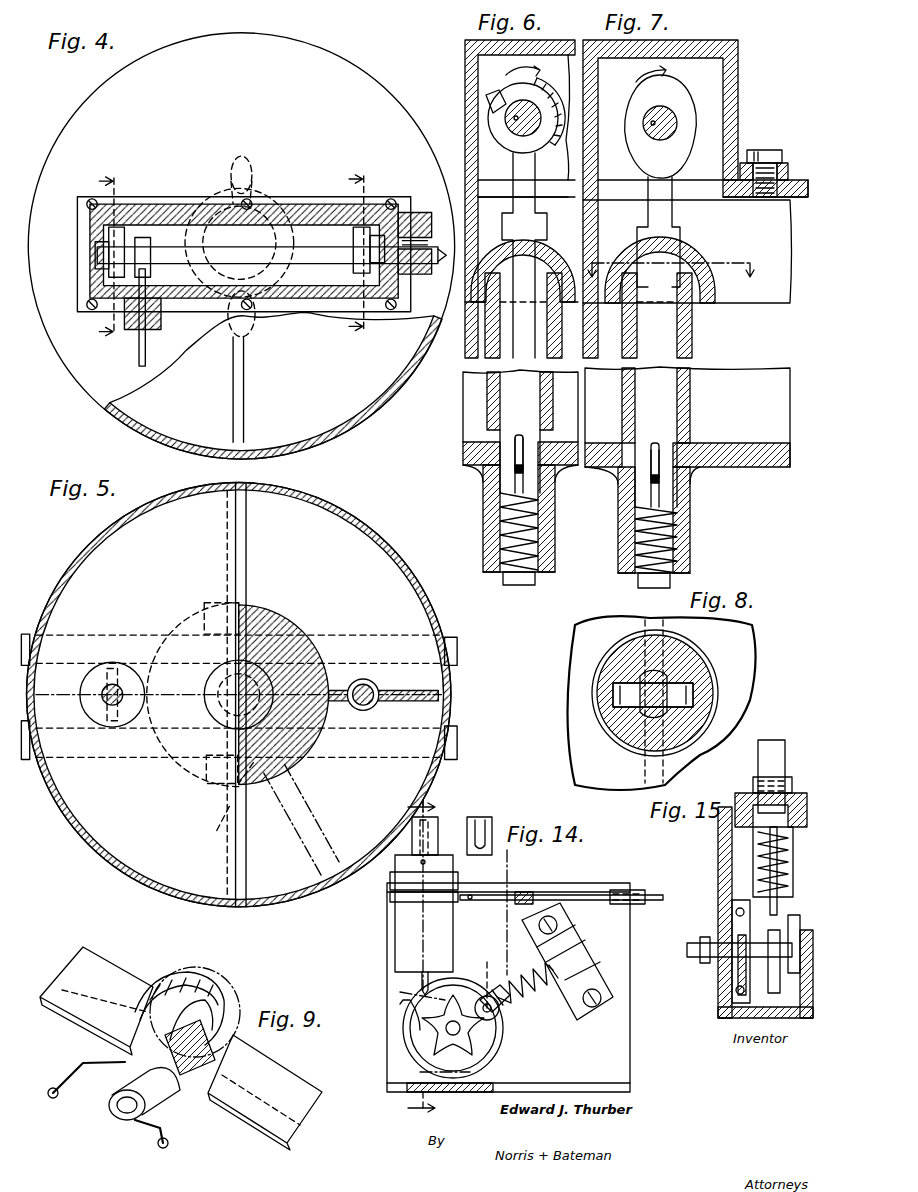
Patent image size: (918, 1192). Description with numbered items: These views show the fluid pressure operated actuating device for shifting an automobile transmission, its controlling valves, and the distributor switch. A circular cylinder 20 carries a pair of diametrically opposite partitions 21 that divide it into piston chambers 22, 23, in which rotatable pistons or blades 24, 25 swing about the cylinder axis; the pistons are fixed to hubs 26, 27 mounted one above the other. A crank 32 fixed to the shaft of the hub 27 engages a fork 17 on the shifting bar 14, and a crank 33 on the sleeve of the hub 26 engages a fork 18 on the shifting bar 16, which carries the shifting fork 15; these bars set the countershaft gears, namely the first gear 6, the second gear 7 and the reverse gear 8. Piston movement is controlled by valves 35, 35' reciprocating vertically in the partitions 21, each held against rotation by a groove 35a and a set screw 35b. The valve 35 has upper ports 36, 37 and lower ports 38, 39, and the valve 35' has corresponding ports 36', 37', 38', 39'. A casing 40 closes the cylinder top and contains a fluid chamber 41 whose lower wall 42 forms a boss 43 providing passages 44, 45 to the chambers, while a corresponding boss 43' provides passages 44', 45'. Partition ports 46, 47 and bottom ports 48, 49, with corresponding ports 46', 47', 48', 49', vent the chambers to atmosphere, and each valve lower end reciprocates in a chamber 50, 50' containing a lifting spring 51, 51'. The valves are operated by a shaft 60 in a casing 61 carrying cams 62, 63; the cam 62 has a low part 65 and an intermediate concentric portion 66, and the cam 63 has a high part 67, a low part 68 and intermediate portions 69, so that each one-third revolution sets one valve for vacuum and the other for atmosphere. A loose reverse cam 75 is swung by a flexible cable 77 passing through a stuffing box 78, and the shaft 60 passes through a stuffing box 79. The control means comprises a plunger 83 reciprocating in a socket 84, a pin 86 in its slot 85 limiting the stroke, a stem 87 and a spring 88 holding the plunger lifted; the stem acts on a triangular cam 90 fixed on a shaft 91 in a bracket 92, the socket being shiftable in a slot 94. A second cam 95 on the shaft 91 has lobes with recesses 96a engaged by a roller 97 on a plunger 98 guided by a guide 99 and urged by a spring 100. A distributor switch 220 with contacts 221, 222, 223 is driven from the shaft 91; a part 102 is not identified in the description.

In FIG. 4, the first gear 6 is at (107, 263).
In FIG. 4, the second gear 7 is at (357, 258).
In FIG. 7, the reverse gear 8 is at (670, 256).
In FIG. 5, the shifting bar 14 is at (436, 745).
In FIG. 14, the shifting fork 15 is at (445, 958).
In FIG. 5, the shifting bar 16 is at (436, 641).
In FIG. 5, the fork 17 is at (231, 803).
In FIG. 5, the fork 18 is at (236, 612).
In FIG. 4, the circular cylinder 20 is at (336, 409).
In FIG. 5, the circular cylinder 20 is at (430, 613).
In FIG. 5, the partitions 21 is at (415, 676).
In FIG. 8, the partitions 21 is at (642, 701).
In FIG. 5, the piston chamber 22 is at (329, 592).
In FIG. 6, the piston chamber 22 is at (456, 392).
In FIG. 7, the piston chamber 22 is at (601, 391).
In FIG. 4, the piston chamber 23 is at (331, 384).
In FIG. 5, the piston chamber 23 is at (364, 822).
In FIG. 6, the piston chamber 23 is at (564, 390).
In FIG. 7, the piston chamber 23 is at (708, 389).
In FIG. 5, the piston 24 is at (233, 549).
In FIG. 9, the piston 24 is at (116, 976).
In FIG. 4, the piston 25 is at (233, 386).
In FIG. 5, the piston 25 is at (233, 836).
In FIG. 9, the piston 25 is at (265, 1117).
In FIG. 9, the hub 26 is at (112, 1057).
In FIG. 9, the hub 27 is at (206, 986).
In FIG. 4, the crank 32 is at (246, 322).
In FIG. 5, the crank 32 is at (202, 777).
In FIG. 9, the crank 32 is at (172, 1142).
In FIG. 4, the crank 33 is at (238, 168).
In FIG. 5, the crank 33 is at (200, 616).
In FIG. 9, the crank 33 is at (70, 1066).
In FIG. 5, the valve 35 is at (112, 688).
In FIG. 6, the valve 35 is at (516, 335).
In FIG. 5, the valve 35' is at (384, 707).
In FIG. 7, the valve 35' is at (655, 337).
In FIG. 8, the valve 35' is at (704, 645).
In FIG. 6, the grooves 35a is at (519, 435).
In FIG. 7, the grooves 35a is at (656, 443).
In FIG. 6, the set screws 35b is at (522, 479).
In FIG. 7, the set screws 35b is at (657, 488).
In FIG. 6, the port 36 is at (524, 255).
In FIG. 7, the port 36' is at (645, 232).
In FIG. 8, the port 36' is at (594, 742).
In FIG. 6, the port 37 is at (552, 224).
In FIG. 7, the port 37' is at (698, 226).
In FIG. 8, the port 37' is at (680, 685).
In FIG. 6, the port 38 is at (480, 461).
In FIG. 7, the port 38' is at (619, 475).
In FIG. 6, the port 39 is at (549, 461).
In FIG. 7, the port 39' is at (687, 475).
In FIG. 7, the casing 40 is at (752, 200).
In FIG. 7, the fluid chamber 41 is at (778, 235).
In FIG. 7, the lower wall 42 is at (760, 284).
In FIG. 8, the lower wall 42 is at (570, 690).
In FIG. 6, the boss 43 is at (521, 249).
In FIG. 8, the boss 43 is at (641, 693).
In FIG. 7, the arch wall 43' is at (668, 266).
In FIG. 6, the passage 44 is at (511, 199).
In FIG. 7, the passage 44' is at (622, 318).
In FIG. 8, the passage 44' is at (649, 693).
In FIG. 6, the passage 45 is at (521, 315).
In FIG. 7, the passage 45' is at (670, 315).
In FIG. 8, the passage 45' is at (686, 695).
In FIG. 6, the port 46 is at (513, 406).
In FIG. 7, the port 46' is at (687, 417).
In FIG. 6, the port 47 is at (520, 437).
In FIG. 7, the port 47' is at (687, 438).
In FIG. 6, the port 48 is at (473, 518).
In FIG. 7, the vent port 48' is at (610, 520).
In FIG. 6, the port 49 is at (558, 518).
In FIG. 7, the vent port 49' is at (694, 520).
In FIG. 6, the chamber 50 is at (533, 558).
In FIG. 7, the chamber 50' is at (670, 560).
In FIG. 6, the spring 51 is at (496, 531).
In FIG. 7, the spring 51' is at (632, 540).
In FIG. 4, the shaft 60 is at (296, 250).
In FIG. 6, the shaft 60 is at (532, 137).
In FIG. 7, the shaft 60 is at (677, 122).
In FIG. 4, the casing 61 is at (182, 280).
In FIG. 4, the cam 62 is at (112, 222).
In FIG. 6, the cam 62 is at (488, 126).
In FIG. 4, the cam 63 is at (352, 222).
In FIG. 7, the cam 63 is at (629, 150).
In FIG. 6, the low part 65 is at (499, 97).
In FIG. 6, the concentric portion 66 is at (510, 138).
In FIG. 7, the high part 67 is at (668, 172).
In FIG. 7, the low part 68 is at (680, 100).
In FIG. 7, the concentric portions 69 is at (629, 118).
In FIG. 4, the cam 75 is at (143, 258).
In FIG. 4, the flexible cable 77 is at (138, 335).
In FIG. 6, the flexible cable 77 is at (546, 86).
In FIG. 4, the stuffing box 78 is at (118, 310).
In FIG. 4, the stuffing box 79 is at (400, 208).
In FIG. 14, the plunger 83 is at (436, 840).
In FIG. 15, the plunger 83 is at (755, 760).
In FIG. 14, the rectangular socket 84 is at (395, 925).
In FIG. 15, the rectangular socket 84 is at (793, 856).
In FIG. 14, the vertical slot 85 is at (420, 831).
In FIG. 14, the pin 86 is at (412, 862).
In FIG. 15, the pin 86 is at (791, 783).
In FIG. 14, the stem 87 is at (420, 975).
In FIG. 15, the stem 87 is at (778, 903).
In FIG. 15, the spring 88 is at (753, 851).
In FIG. 14, the triangular cam 90 is at (410, 1031).
In FIG. 15, the triangular cam 90 is at (780, 986).
In FIG. 15, the shaft 91 is at (700, 956).
In FIG. 14, the bracket 92 is at (625, 1030).
In FIG. 15, the bracket 92 is at (765, 912).
In FIG. 14, the slot 94 is at (516, 888).
In FIG. 15, the second cam 95 is at (800, 931).
In FIG. 14, the recesses 96a is at (430, 1041).
In FIG. 14, the roller 97 is at (505, 1019).
In FIG. 14, the plunger 98 is at (526, 968).
In FIG. 14, the guide 99 is at (570, 936).
In FIG. 14, the spring 100 is at (567, 1005).
In FIG. 14, the slide 102 is at (648, 896).
In FIG. 15, the distributor switch 220 is at (732, 926).
In FIG. 14, the contact 221 is at (466, 1073).
In FIG. 15, the contact 221 is at (735, 1000).
In FIG. 14, the contact 222 is at (482, 981).
In FIG. 14, the contact 223 is at (401, 995).